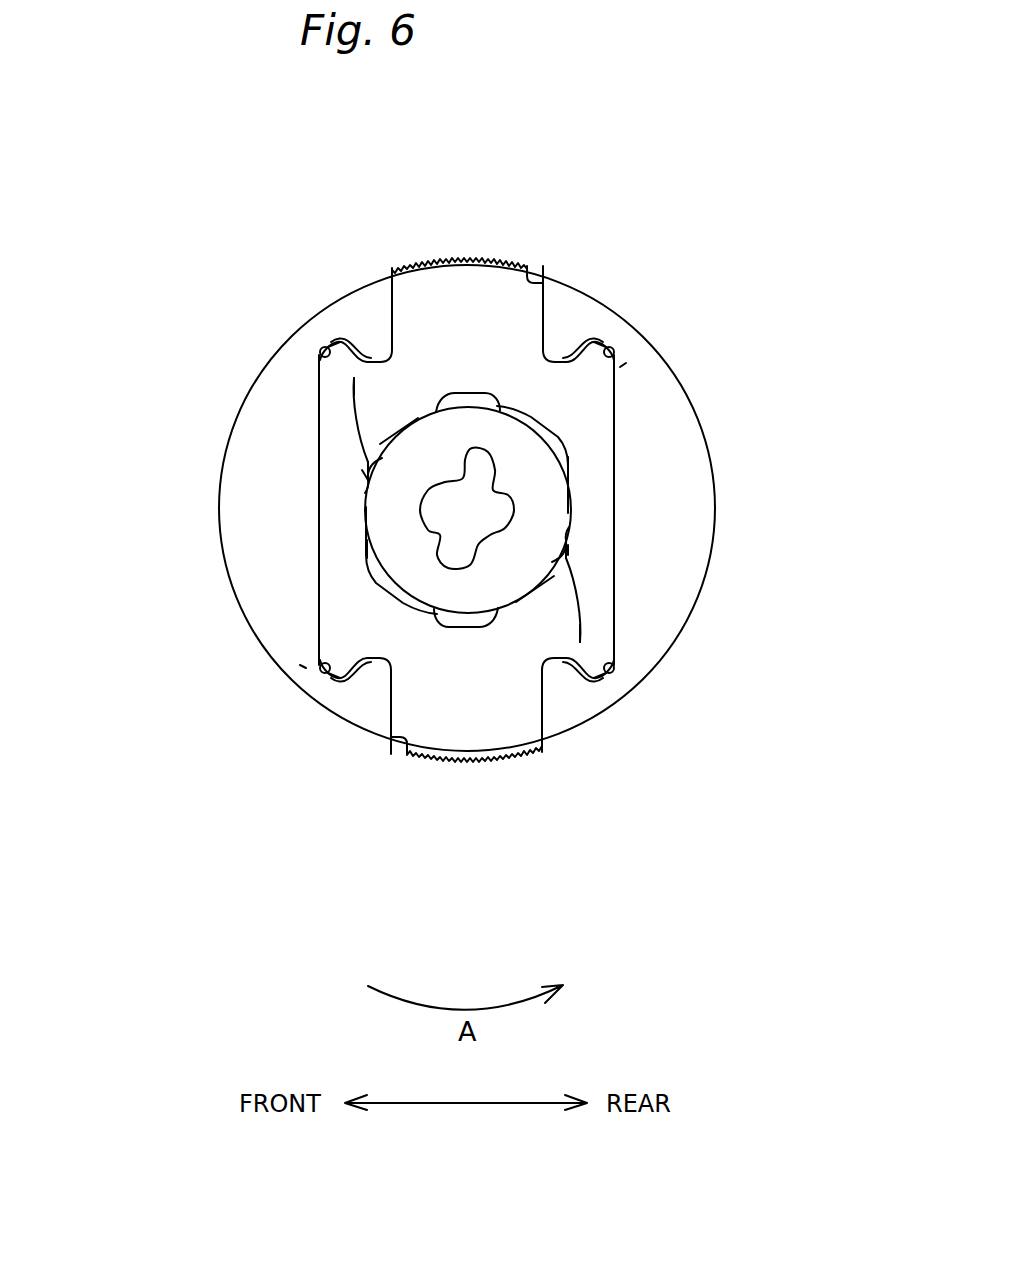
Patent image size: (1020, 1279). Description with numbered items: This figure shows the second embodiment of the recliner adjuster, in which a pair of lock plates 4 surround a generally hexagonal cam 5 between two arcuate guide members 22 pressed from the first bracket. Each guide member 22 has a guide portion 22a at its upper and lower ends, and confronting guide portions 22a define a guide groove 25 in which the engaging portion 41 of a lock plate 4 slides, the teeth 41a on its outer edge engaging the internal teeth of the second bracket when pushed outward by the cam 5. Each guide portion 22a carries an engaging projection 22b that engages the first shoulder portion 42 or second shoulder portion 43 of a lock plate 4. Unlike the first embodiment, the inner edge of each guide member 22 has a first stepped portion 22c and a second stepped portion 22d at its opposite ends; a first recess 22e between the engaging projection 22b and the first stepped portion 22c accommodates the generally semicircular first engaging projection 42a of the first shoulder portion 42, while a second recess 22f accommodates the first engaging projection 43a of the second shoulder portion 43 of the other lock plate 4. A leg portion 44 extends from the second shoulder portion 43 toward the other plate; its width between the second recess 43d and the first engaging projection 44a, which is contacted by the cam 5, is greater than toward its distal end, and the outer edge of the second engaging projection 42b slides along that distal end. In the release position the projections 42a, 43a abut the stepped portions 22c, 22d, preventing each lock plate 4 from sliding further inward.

The lock plate 4 is at (429, 241).
The cam 5 is at (475, 590).
The guide member 22 is at (240, 468).
The guide portion 22a is at (372, 300).
The engaging projection 22b is at (370, 350).
The first stepped portion 22c is at (313, 388).
The second stepped portion 22d is at (313, 632).
The first recess 22e is at (318, 357).
The second recess 22f is at (615, 350).
The guide groove 25 is at (528, 277).
The engaging portion 41 is at (465, 307).
The teeth 41a is at (508, 257).
The first shoulder portion 42 is at (342, 410).
The first engaging projection 42a is at (330, 367).
The second engaging projection 42b is at (367, 430).
The second shoulder portion 43 is at (347, 628).
The first engaging projection 43a is at (322, 660).
The second recess 43d is at (367, 558).
The leg portion 44 is at (332, 522).
The first engaging projection 44a is at (362, 470).